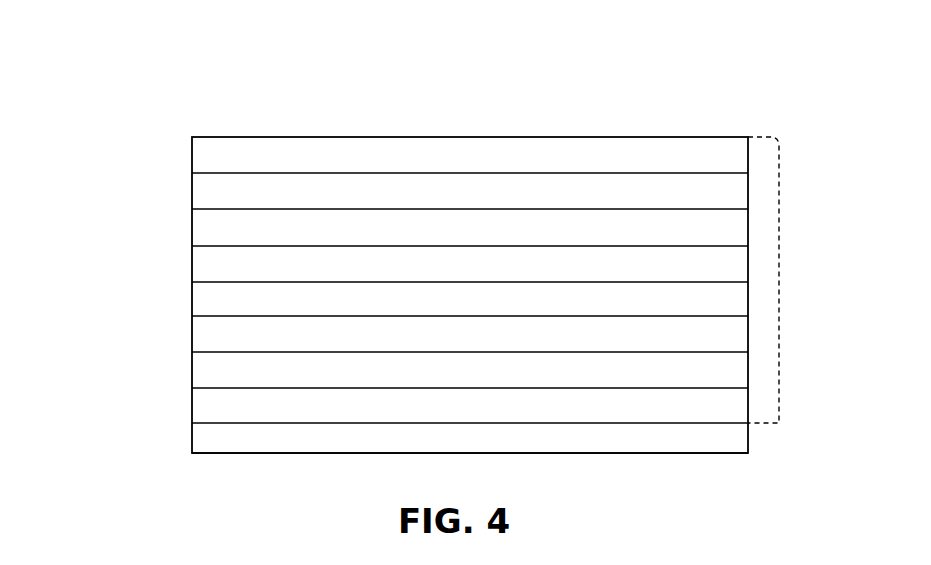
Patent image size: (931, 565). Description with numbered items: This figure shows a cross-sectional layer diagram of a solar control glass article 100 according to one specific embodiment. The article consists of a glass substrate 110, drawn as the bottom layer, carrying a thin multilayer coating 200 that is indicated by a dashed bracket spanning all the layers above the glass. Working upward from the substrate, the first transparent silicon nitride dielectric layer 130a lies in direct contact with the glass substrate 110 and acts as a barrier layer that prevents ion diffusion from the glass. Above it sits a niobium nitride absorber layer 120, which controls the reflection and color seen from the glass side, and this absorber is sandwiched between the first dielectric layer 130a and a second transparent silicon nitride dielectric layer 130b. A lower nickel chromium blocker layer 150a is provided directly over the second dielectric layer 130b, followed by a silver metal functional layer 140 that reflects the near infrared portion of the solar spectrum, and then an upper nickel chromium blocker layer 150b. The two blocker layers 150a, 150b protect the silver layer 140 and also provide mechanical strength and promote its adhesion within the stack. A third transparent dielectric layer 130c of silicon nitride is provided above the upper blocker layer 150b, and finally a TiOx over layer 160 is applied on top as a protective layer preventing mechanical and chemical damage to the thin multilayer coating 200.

The solar control glass article 100 is at (545, 117).
The glass substrate 110 is at (748, 444).
The niobium nitride absorber layer 120 is at (742, 367).
The first transparent silicon nitride dielectric layer 130a is at (192, 408).
The second transparent silicon nitride dielectric layer 130b is at (192, 347).
The third transparent dielectric layer 130c is at (192, 190).
The silver metal functional layer 140 is at (742, 266).
The lower nickel chromium blocker layer 150a is at (192, 301).
The upper nickel chromium blocker layer 150b is at (192, 233).
The TiOx over layer 160 is at (748, 158).
The thin multilayer coating 200 is at (779, 279).